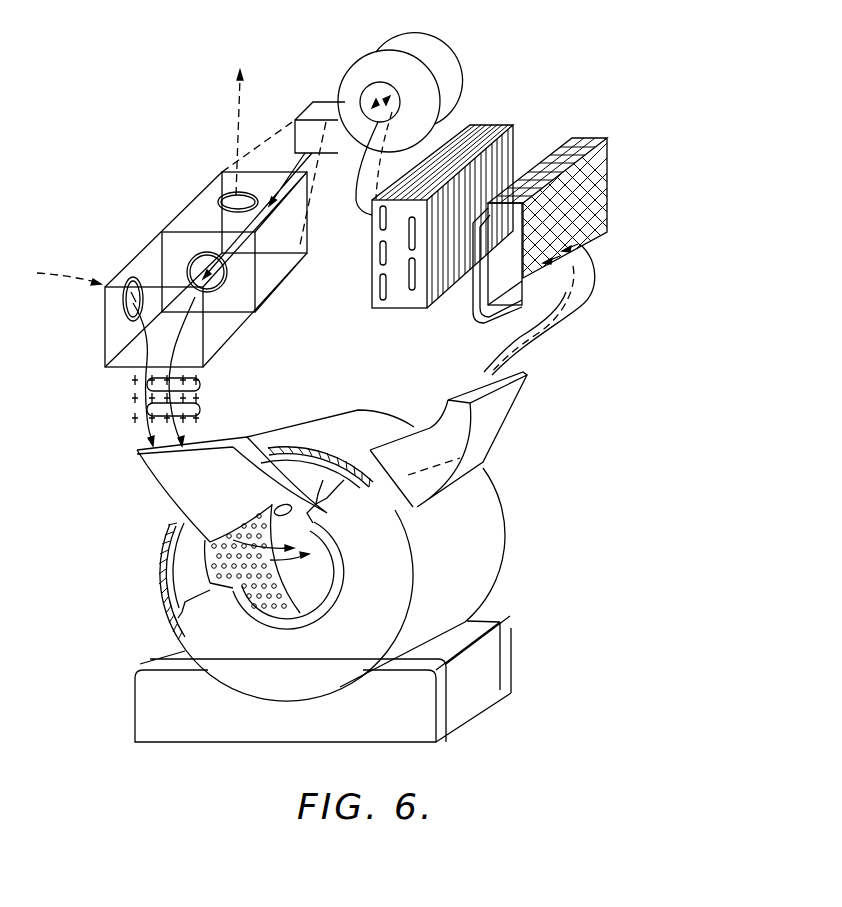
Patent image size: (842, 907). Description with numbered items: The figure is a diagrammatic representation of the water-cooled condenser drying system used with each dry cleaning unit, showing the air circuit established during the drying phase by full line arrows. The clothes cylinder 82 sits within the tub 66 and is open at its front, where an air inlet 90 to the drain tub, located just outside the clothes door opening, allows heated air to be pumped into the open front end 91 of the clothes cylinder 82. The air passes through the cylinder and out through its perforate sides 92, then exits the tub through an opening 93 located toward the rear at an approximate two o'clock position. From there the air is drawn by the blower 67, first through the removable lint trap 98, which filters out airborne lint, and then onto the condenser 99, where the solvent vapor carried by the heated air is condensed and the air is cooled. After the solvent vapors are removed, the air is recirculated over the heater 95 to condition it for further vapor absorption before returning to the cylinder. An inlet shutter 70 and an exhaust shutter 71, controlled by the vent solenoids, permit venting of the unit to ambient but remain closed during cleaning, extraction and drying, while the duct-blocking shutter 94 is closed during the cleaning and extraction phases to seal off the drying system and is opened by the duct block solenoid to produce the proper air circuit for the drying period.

The tub 66 is at (170, 523).
The blower 67 is at (443, 43).
The inlet shutter 70 is at (130, 277).
The exhaust shutter 71 is at (233, 200).
The clothes cylinder 82 is at (188, 563).
The air inlet 90 is at (278, 507).
The open front end 91 is at (325, 503).
The perforate sides 92 is at (217, 580).
The opening 93 is at (460, 458).
The duct-blocking shutter 94 is at (187, 263).
The heater 95 is at (202, 383).
The lint trap 98 is at (607, 197).
The condenser 99 is at (503, 150).